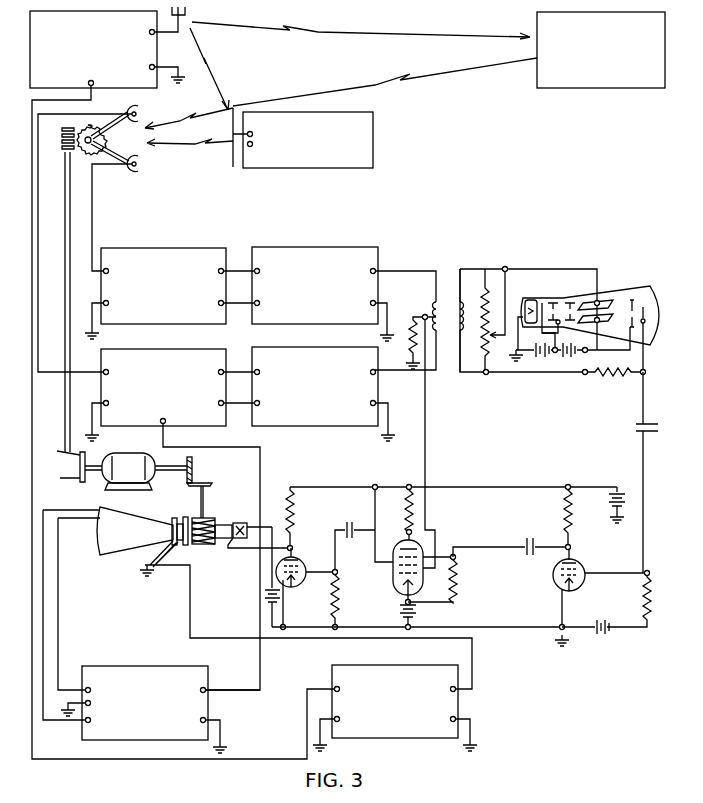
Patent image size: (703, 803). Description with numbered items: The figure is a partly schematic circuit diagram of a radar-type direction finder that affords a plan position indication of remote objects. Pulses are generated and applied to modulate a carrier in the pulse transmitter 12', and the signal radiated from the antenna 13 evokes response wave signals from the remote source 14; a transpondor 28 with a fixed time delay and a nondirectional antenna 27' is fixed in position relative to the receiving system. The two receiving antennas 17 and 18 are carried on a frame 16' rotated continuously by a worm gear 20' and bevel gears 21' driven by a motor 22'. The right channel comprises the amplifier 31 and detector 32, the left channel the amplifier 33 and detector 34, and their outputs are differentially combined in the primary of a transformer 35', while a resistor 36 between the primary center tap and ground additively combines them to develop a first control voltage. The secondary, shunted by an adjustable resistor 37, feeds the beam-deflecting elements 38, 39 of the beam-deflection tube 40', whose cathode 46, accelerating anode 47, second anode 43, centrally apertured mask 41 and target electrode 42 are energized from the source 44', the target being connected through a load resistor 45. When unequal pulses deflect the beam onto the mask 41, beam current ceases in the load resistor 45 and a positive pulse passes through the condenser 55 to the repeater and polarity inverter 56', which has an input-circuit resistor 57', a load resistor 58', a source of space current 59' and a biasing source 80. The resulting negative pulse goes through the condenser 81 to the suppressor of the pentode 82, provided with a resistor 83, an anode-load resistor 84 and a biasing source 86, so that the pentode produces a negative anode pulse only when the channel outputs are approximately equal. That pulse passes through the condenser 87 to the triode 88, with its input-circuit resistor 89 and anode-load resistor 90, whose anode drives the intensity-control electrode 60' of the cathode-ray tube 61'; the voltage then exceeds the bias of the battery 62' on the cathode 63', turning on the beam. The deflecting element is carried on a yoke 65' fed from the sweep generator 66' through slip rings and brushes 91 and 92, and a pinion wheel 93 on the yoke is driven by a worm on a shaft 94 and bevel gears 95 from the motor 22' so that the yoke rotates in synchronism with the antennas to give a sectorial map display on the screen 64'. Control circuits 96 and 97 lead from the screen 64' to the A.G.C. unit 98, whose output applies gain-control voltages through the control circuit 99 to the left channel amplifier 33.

The pulse transmitter unit 12' is at (183, 385).
The antenna 13 is at (163, 40).
The remote object 14 is at (537, 58).
The frame 16' is at (100, 149).
The antenna 17 is at (138, 168).
The antenna 18 is at (138, 108).
The worm gear 20' is at (56, 290).
The bevel gears 21' is at (69, 467).
The motor 22' is at (144, 463).
The nondirectional antenna 27' is at (227, 141).
The transpondor 28 is at (373, 127).
The amplifier 31 is at (147, 247).
The detector 32 is at (309, 247).
The amplifier 33 is at (215, 428).
The detector 34 is at (380, 388).
The transformer 35' is at (448, 304).
The resistor 36 is at (412, 330).
The adjustable resistor 37 is at (474, 306).
The beam-deflecting element 38 is at (614, 305).
The beam-deflecting element 39 is at (604, 328).
The beam-deflection tube 40' is at (590, 295).
The centrally apertured mask 41 is at (632, 299).
The target electrode 42 is at (647, 300).
The second anode 43 is at (560, 300).
The energizing source 44' is at (553, 363).
The load resistor 45 is at (600, 376).
The cathode 46 is at (535, 300).
The accelerating anode 47 is at (545, 316).
The condenser 55 is at (636, 430).
The repeater and polarity inverter 56' is at (600, 594).
The input-circuit resistor 57' is at (626, 599).
The load resistor 58' is at (551, 517).
The source of space current 59' is at (608, 502).
The intensity-control electrode 60' is at (236, 549).
The cathode-ray tube 61' is at (135, 543).
The biasing battery 62' is at (262, 577).
The cathode 63' is at (259, 526).
The display screen 64' is at (71, 531).
The yoke 65' is at (190, 519).
The generator 66' is at (395, 715).
The source of biasing potential 80 is at (606, 634).
The condenser 81 is at (530, 537).
The pentode vacuum tube 82 is at (394, 557).
The resistor 83 is at (460, 598).
The anode-load resistor 84 is at (405, 520).
The source of biasing potential 86 is at (400, 612).
The condenser 87 is at (349, 520).
The triode vacuum tube 88 is at (305, 566).
The input-circuit resistor 89 is at (338, 605).
The anode-load resistor 90 is at (296, 520).
The slip rings and brushes 91 is at (183, 546).
The slip rings and brushes 92 is at (306, 615).
The pinion wheel 93 is at (200, 548).
The shaft 94 is at (205, 500).
The bevel gears 95 is at (194, 484).
The control circuit 96 is at (52, 580).
The control circuit 97 is at (50, 598).
The automatic-gain-control unit 98 is at (126, 666).
The control circuit 99 is at (262, 648).